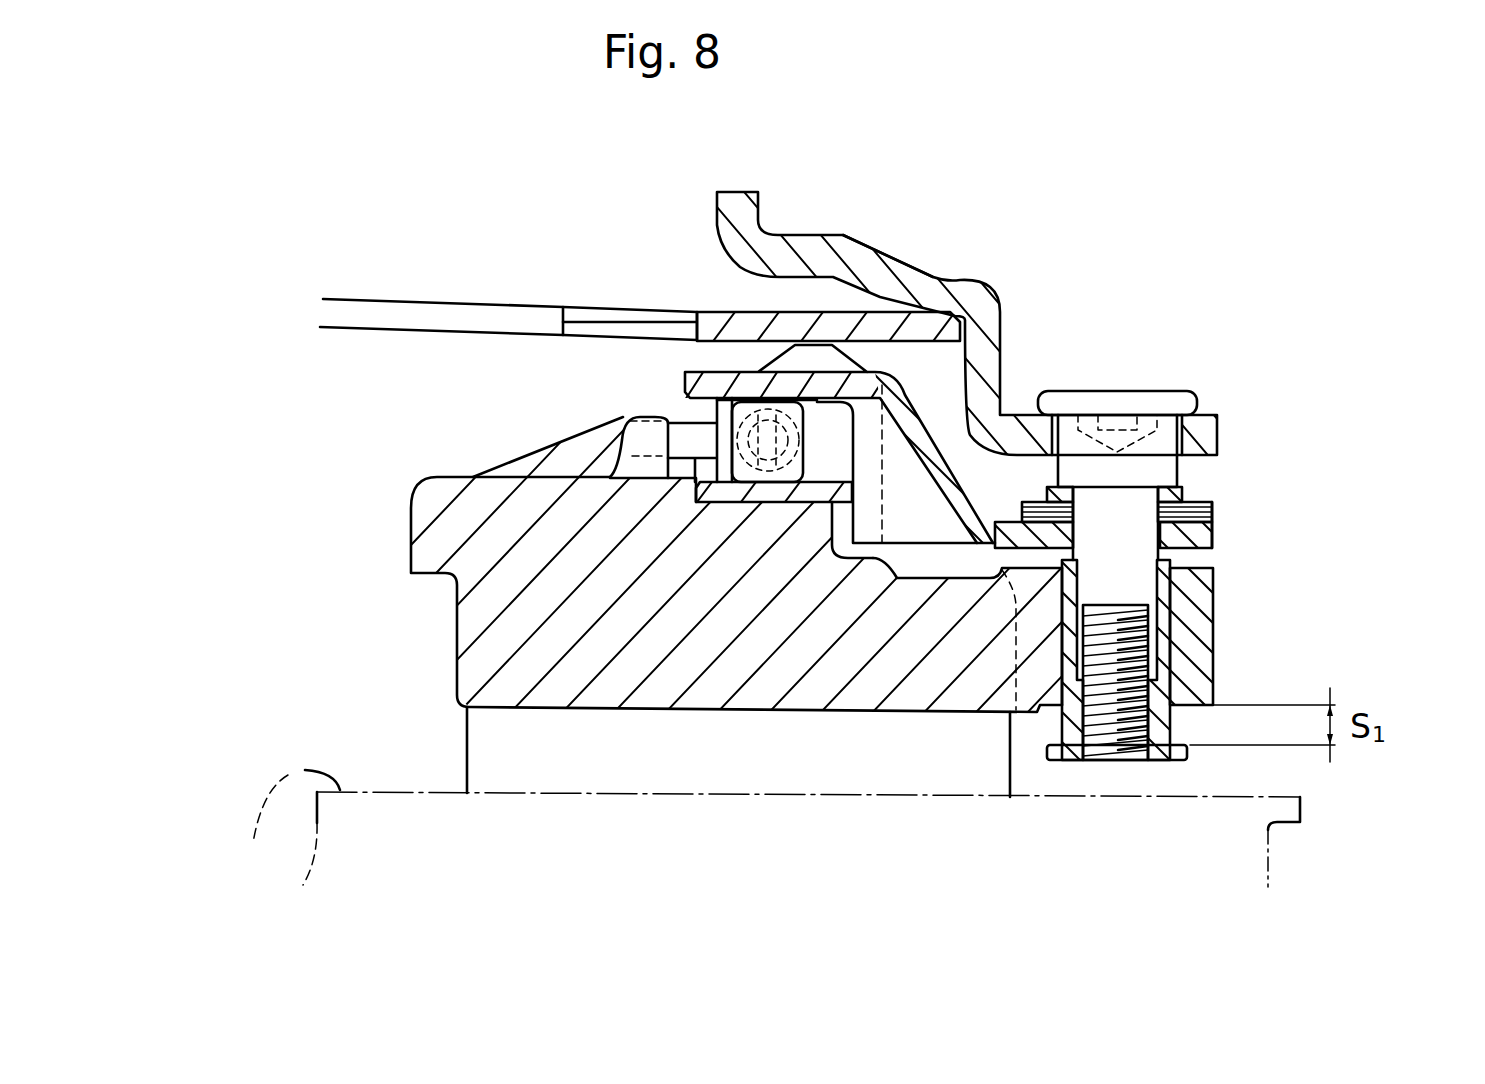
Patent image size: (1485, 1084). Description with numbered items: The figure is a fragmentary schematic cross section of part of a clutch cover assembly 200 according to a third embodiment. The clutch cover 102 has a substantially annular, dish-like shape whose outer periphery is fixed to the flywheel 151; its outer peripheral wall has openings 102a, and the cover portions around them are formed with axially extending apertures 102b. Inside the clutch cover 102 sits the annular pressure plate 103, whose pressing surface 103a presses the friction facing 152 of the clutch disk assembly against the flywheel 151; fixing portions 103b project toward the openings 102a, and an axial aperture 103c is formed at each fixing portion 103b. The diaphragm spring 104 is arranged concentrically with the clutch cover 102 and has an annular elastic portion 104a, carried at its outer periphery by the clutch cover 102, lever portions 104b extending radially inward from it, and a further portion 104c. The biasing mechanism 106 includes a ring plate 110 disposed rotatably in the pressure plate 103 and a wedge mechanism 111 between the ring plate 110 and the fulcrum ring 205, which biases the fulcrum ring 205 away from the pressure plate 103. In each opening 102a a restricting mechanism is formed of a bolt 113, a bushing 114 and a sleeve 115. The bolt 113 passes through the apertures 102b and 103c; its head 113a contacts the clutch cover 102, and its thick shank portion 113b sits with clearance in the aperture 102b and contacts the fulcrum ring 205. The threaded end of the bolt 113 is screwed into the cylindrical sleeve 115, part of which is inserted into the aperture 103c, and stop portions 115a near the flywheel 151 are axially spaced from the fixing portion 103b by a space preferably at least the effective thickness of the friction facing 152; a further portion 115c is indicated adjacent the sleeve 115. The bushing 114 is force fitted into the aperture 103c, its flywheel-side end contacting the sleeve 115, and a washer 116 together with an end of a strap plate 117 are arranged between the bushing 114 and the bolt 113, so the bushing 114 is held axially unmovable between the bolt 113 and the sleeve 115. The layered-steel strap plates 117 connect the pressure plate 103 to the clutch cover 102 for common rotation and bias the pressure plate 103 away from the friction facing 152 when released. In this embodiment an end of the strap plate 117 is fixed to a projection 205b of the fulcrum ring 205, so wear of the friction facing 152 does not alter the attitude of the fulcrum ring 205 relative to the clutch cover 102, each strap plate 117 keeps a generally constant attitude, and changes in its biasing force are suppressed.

The clutch cover 102 is at (1005, 292).
The openings 102a is at (940, 313).
The apertures 102b is at (1166, 428).
The pressure plate 103 is at (858, 647).
The pressing surface 103a is at (703, 711).
The fixing portions 103b is at (1197, 633).
The aperture 103c is at (1173, 585).
The diaphragm spring 104 is at (621, 236).
The annular elastic portion 104a is at (755, 318).
The lever portions 104b is at (393, 317).
The intermediate portion of blade 104c is at (627, 327).
The biasing mechanism 106 is at (650, 370).
The ring plate 110 is at (713, 410).
The wedge mechanism 111 is at (713, 497).
The bolt 113 is at (1182, 386).
The head of nut 113a is at (1068, 398).
The thick shank portion 113b is at (1160, 475).
The bushing 114 is at (1217, 642).
The sleeve 115 is at (1223, 745).
The stop portions 115a is at (1187, 755).
The threaded hole 115c is at (1017, 595).
The washer 116 is at (1182, 495).
The strap plates 117 is at (1215, 508).
The flywheel 151 is at (282, 827).
The friction facing 152 is at (467, 740).
The clutch cover assembly 200 is at (960, 507).
The fulcrum ring 205 is at (1009, 432).
The projection 205b is at (1217, 535).